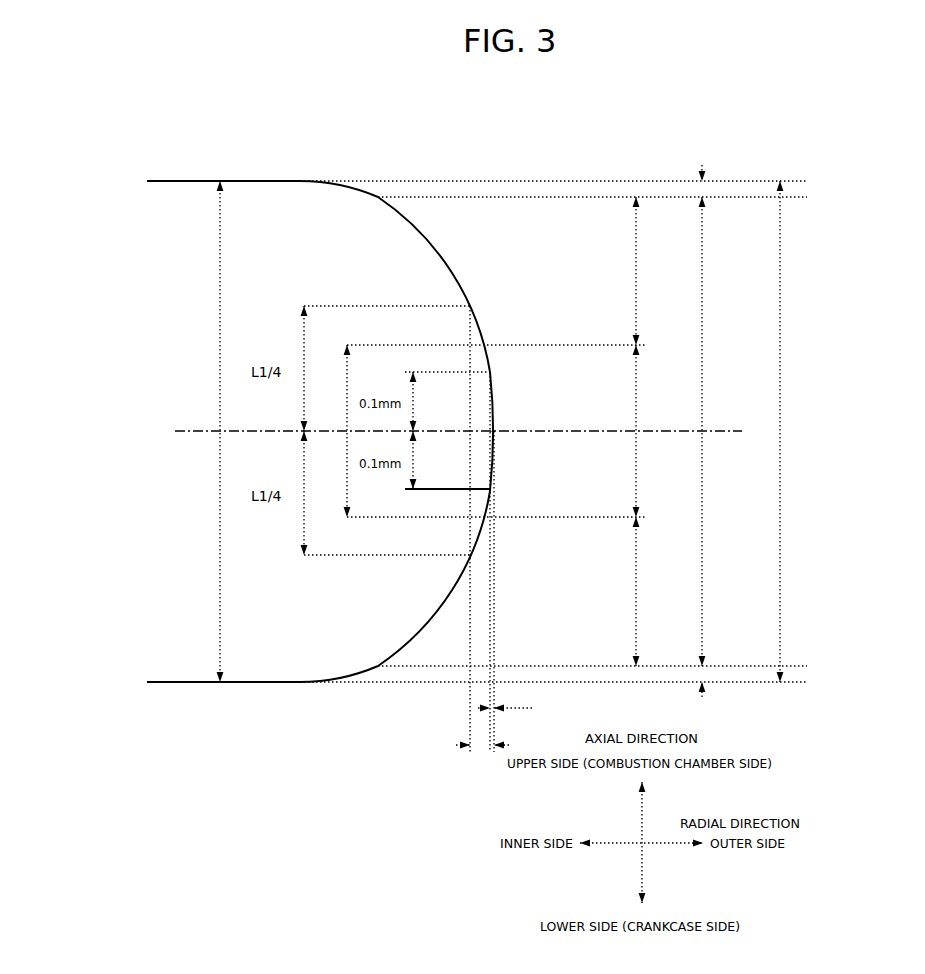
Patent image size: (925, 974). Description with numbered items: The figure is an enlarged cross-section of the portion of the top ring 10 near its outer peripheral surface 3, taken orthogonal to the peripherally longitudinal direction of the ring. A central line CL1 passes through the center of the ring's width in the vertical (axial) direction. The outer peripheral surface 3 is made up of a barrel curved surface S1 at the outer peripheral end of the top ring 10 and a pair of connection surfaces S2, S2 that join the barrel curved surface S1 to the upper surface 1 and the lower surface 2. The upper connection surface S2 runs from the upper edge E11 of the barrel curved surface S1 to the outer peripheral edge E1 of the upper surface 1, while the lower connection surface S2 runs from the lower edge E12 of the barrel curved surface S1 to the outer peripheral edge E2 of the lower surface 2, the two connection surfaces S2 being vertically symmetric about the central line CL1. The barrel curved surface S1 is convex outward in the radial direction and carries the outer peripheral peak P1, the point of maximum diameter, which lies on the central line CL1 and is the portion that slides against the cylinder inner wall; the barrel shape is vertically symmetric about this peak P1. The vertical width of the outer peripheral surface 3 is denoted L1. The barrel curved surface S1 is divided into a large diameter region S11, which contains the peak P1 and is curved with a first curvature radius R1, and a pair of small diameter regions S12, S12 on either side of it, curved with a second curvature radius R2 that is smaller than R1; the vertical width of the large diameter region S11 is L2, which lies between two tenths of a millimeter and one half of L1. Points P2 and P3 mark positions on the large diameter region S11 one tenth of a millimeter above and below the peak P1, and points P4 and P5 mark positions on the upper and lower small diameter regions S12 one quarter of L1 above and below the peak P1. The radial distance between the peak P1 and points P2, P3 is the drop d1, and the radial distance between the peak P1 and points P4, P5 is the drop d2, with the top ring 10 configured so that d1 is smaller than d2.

The upper surface 1 is at (273, 178).
The lower surface 2 is at (274, 685).
The outer peripheral surface 3 is at (782, 442).
The top ring 10 is at (553, 402).
The outer peripheral edge of the upper surface E1 is at (302, 180).
The outer peripheral edge of the lower surface E2 is at (302, 683).
The upper edge E11 is at (376, 199).
The lower edge E12 is at (376, 665).
The first curvature radius R1 is at (491, 413).
The second curvature radius R2 is at (430, 250).
The outer peripheral peak P1 is at (494, 433).
The point P2 is at (491, 373).
The point P3 is at (491, 489).
The point P4 is at (471, 306).
The point P5 is at (471, 557).
The central line CL1 is at (574, 430).
The width of the outer peripheral surface L1 is at (208, 431).
The width of the large diameter region L2 is at (486, 431).
The barrel curved surface S1 is at (704, 400).
The connection surface S2 is at (705, 188).
The large diameter region S11 is at (638, 400).
The small diameter region S12 is at (638, 283).
The drop d1 is at (505, 562).
The drop d2 is at (482, 541).